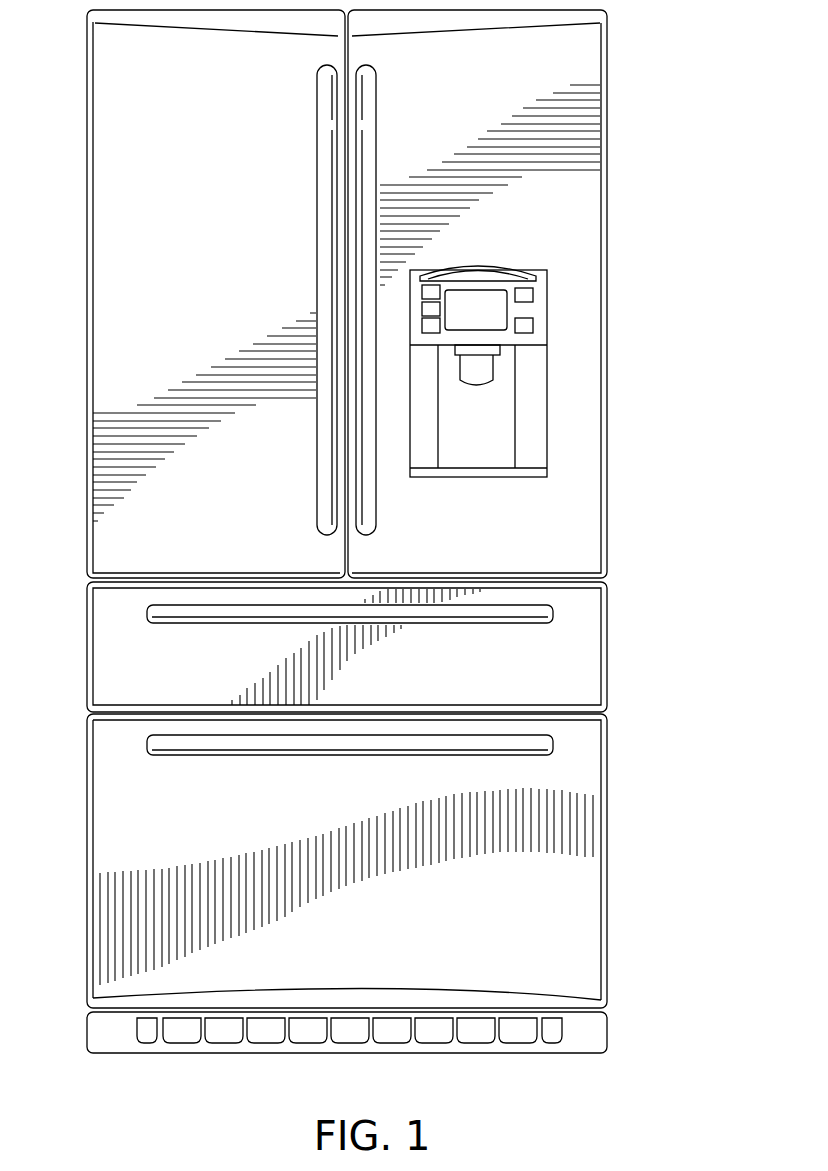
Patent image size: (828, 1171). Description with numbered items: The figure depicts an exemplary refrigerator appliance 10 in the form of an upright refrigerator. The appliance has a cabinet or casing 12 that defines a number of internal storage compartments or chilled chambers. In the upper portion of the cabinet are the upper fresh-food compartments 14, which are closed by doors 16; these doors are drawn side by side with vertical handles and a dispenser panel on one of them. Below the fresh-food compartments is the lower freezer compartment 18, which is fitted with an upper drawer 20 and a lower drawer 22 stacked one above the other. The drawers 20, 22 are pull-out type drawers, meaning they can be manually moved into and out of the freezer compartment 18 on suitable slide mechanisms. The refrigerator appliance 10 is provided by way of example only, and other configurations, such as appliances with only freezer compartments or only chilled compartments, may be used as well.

The refrigerator appliance 10 is at (378, 531).
The cabinet 12 is at (607, 497).
The upper fresh-food compartments 14 is at (319, 294).
The doors 16 is at (228, 493).
The lower freezer compartment 18 is at (386, 795).
The upper drawer 20 is at (193, 678).
The lower drawer 22 is at (451, 938).